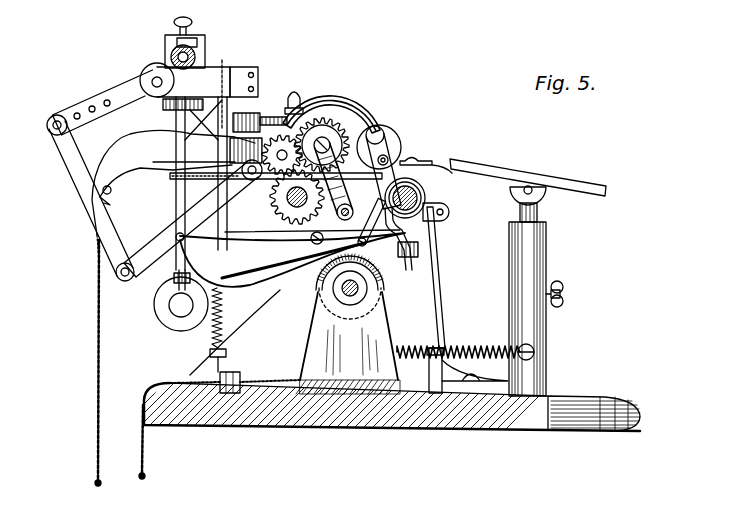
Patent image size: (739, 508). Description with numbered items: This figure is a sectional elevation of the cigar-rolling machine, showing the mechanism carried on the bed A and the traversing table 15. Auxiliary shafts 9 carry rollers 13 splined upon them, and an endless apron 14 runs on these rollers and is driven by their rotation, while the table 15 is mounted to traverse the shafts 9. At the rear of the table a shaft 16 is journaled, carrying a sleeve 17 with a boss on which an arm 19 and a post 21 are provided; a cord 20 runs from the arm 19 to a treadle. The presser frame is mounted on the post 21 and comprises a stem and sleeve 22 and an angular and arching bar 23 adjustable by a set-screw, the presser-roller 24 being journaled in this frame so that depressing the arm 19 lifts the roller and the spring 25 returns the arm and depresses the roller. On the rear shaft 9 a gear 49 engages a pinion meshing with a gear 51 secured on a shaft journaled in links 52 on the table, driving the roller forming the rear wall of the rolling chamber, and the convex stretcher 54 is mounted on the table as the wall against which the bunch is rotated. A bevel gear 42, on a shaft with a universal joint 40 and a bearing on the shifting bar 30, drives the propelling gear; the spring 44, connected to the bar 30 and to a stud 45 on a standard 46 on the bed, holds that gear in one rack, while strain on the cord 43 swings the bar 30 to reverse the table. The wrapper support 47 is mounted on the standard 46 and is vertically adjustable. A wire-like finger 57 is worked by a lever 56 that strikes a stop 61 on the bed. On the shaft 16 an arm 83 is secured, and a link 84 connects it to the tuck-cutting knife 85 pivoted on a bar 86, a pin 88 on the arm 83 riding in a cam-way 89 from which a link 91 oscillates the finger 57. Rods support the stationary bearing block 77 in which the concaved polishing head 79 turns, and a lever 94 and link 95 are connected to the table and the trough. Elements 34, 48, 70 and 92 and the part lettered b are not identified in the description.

The bed A is at (370, 403).
The auxiliary shafts 9 is at (445, 209).
The rollers 13 is at (420, 197).
The endless apron 14 is at (276, 166).
The table 15 is at (434, 168).
The shaft 16 is at (175, 119).
The sleeve 17 is at (309, 174).
The arm 19 is at (173, 196).
The cord 20 is at (197, 363).
The post 21 is at (262, 115).
The stem and sleeve 22 is at (302, 104).
The angular and arching bar 23 is at (340, 114).
The presser-roller 24 is at (393, 138).
The spring 25 is at (158, 172).
The bar 30 is at (349, 322).
The hub 34 is at (368, 306).
The universal joint 40 is at (290, 260).
The bevel gear 42 is at (376, 270).
The cord 43 is at (253, 371).
The spring 44 is at (458, 344).
The stud 45 is at (535, 352).
The standard 46 is at (541, 309).
The feed table or wrapper support 47 is at (528, 174).
The pivot hub 48 is at (539, 204).
The gear 49 is at (300, 200).
The gear 51 is at (383, 112).
The links 52 is at (328, 169).
The stretcher 54 is at (462, 134).
The lever 56 is at (434, 304).
The finger or tuck-holder 57 is at (402, 156).
The stop 61 is at (458, 370).
The ring 70 is at (167, 304).
The stationary bearing block 77 is at (193, 42).
The concaved head 79 is at (212, 64).
The arm 83 is at (193, 218).
The link 84 is at (72, 178).
The tuck-cutting knife 85 is at (142, 99).
The bar 86 is at (244, 82).
The pin 88 is at (167, 280).
The cam-way 89 is at (293, 264).
The link 91 is at (374, 222).
The screw 92 is at (324, 250).
The lever 94 is at (235, 331).
The link 95 is at (171, 183).
The arm b is at (205, 86).